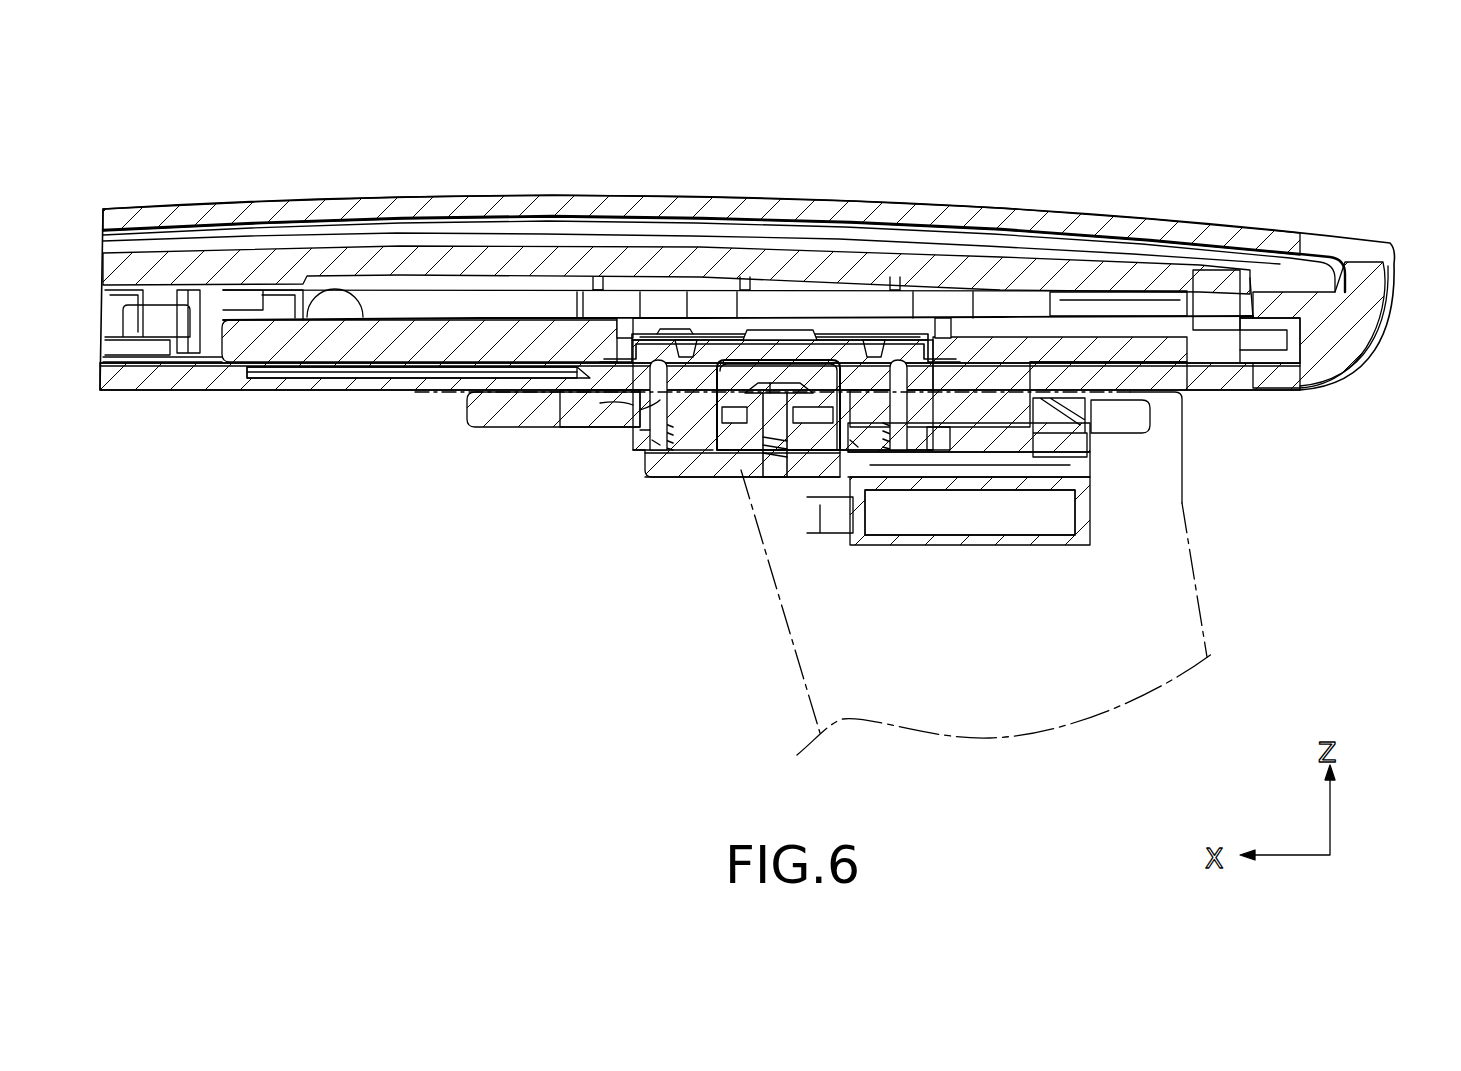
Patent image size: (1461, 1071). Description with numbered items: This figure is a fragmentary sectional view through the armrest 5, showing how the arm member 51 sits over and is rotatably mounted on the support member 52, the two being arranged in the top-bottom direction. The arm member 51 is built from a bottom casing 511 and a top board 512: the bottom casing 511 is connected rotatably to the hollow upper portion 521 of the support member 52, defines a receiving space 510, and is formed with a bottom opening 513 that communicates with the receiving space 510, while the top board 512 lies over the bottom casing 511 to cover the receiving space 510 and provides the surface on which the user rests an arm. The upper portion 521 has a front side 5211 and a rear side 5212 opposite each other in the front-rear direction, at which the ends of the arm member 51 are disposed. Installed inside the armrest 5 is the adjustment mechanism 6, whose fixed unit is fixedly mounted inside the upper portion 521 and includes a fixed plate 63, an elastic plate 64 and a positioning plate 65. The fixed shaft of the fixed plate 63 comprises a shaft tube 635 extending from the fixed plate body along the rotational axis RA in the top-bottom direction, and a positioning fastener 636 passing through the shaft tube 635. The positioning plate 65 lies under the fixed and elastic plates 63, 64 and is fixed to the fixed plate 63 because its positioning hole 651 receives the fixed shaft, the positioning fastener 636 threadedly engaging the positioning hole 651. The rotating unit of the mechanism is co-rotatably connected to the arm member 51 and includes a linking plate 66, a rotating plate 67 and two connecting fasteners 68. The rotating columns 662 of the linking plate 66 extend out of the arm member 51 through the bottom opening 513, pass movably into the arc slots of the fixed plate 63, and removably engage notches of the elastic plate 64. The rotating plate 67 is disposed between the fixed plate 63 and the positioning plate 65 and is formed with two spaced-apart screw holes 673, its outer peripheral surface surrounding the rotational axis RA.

The armrest 5 is at (587, 201).
The arm member 51 is at (747, 311).
The bottom casing 511 is at (1360, 362).
The receiving space 510 is at (808, 329).
The top board 512 is at (1098, 214).
The bottom opening 513 is at (312, 373).
The support member 52 is at (1198, 627).
The upper portion 521 is at (1185, 545).
The front side 5211 is at (460, 400).
The rear side 5212 is at (1183, 438).
The adjustment mechanism 6 is at (723, 483).
The fixed plate 63 is at (505, 418).
The elastic plate 64 is at (733, 420).
The positioning plate 65 is at (657, 480).
The positioning hole 651 is at (760, 433).
The shaft tube 635 is at (752, 440).
The positioning fastener 636 is at (790, 473).
The linking plate 66 is at (735, 353).
The rotating columns 662 is at (658, 405).
The rotating plate 67 is at (648, 435).
The screw holes 673 is at (655, 440).
The connecting fasteners 68 is at (672, 375).
The rotational axis RA is at (777, 400).